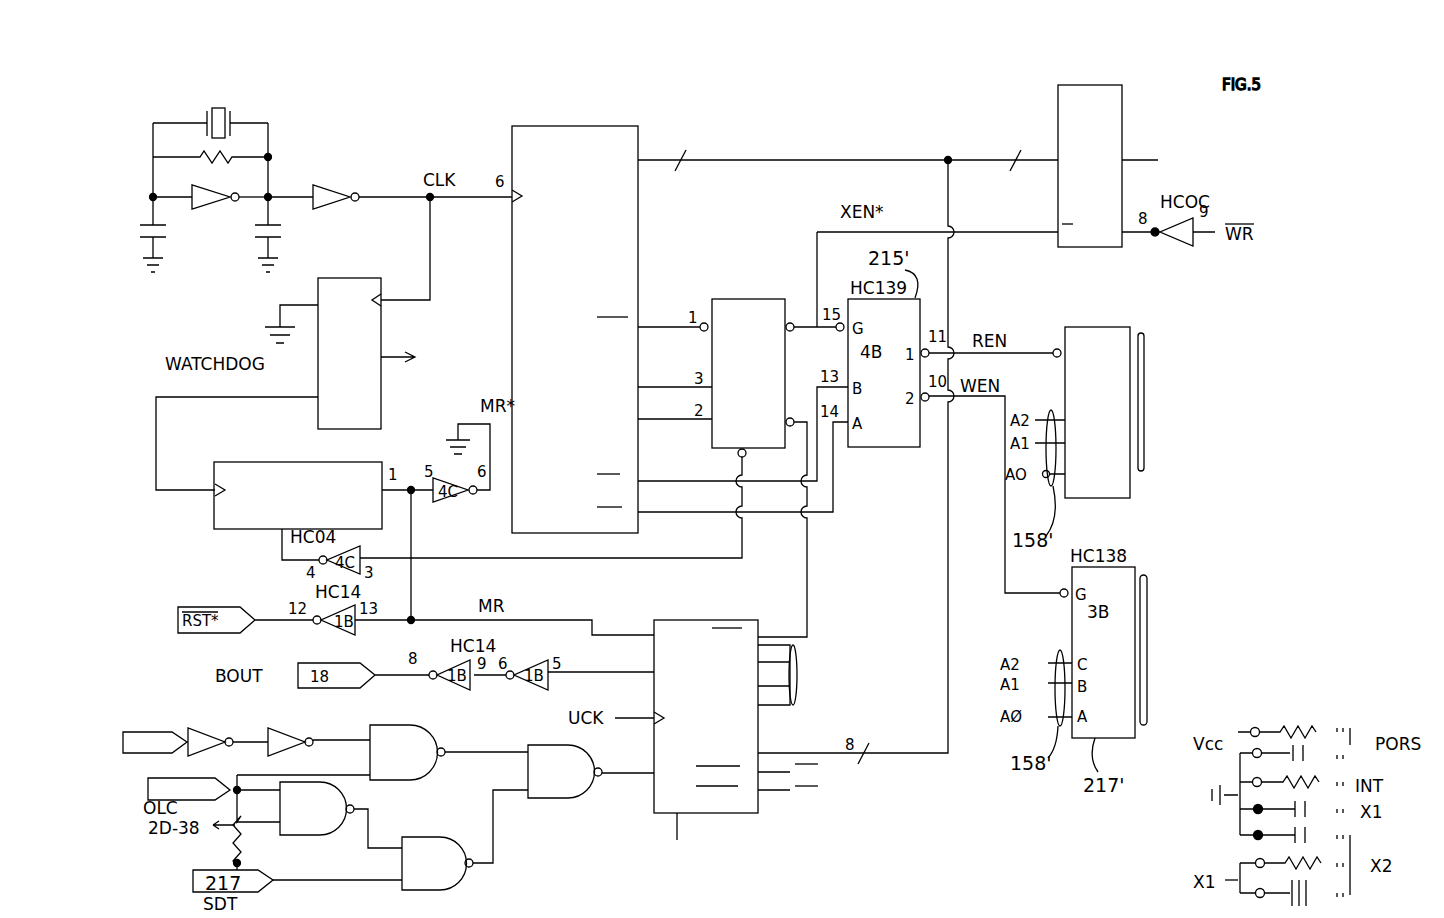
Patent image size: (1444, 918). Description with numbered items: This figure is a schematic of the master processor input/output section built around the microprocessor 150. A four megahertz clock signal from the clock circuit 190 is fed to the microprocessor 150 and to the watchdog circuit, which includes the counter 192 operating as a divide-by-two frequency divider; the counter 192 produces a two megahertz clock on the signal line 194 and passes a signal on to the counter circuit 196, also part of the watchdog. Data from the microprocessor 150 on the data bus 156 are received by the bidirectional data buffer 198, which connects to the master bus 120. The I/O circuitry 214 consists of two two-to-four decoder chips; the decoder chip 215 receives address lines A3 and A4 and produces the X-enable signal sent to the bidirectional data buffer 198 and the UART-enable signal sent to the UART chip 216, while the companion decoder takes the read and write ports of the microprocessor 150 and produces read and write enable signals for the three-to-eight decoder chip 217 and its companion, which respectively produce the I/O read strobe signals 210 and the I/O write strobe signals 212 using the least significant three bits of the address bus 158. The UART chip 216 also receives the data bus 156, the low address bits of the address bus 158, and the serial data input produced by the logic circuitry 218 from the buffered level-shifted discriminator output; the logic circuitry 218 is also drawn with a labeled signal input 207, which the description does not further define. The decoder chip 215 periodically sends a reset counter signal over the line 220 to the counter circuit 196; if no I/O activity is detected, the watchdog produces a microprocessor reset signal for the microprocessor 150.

The clock circuit 190 is at (318, 113).
The microprocessor 150 is at (640, 256).
The data bus 156 is at (725, 162).
The two-to-four decoder chip 215 is at (787, 298).
The I/O circuitry 214 is at (854, 533).
The line 220 is at (572, 558).
The bidirectional data buffer 198 is at (1122, 112).
The master bus 120 is at (1137, 160).
The three-to-eight decoder chip 217 is at (1060, 326).
The I/O read strobe signals 210 is at (1140, 345).
The I/O write strobe signals 212 is at (1140, 586).
The UART chip 216 is at (735, 813).
The address bus 158 is at (795, 705).
The counter 192 is at (381, 424).
The signal line 194 is at (395, 370).
The counter circuit 196 is at (214, 526).
The logic circuitry 218 is at (532, 831).
The OLC signal input 207 is at (189, 790).